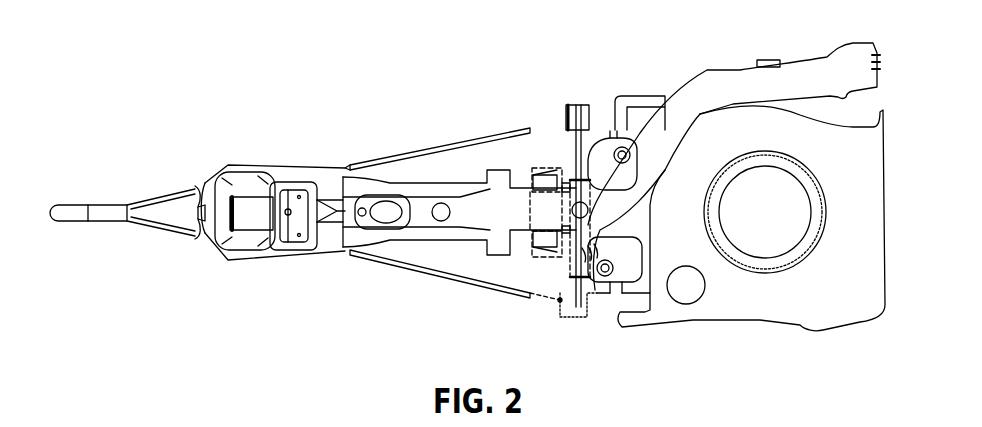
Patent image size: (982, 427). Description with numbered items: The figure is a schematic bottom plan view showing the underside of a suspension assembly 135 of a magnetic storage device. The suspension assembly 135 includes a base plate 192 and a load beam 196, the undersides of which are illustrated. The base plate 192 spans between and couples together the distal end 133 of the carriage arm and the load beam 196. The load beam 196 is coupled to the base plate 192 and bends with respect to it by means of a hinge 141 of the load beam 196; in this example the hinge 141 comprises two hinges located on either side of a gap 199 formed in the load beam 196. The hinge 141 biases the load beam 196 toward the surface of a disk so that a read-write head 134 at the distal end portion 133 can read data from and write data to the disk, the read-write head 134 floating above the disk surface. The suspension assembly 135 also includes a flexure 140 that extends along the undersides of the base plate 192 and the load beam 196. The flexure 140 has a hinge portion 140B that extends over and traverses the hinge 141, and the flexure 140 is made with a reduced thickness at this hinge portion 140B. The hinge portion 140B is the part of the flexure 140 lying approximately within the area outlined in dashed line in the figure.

The distal end 133 is at (175, 310).
The read-write head 134 is at (253, 212).
The suspension assembly 135 is at (437, 145).
The flexure 140 is at (497, 258).
The hinge portion 140B is at (532, 258).
The hinge 141 is at (546, 143).
The base plate 192 is at (620, 97).
The load beam 196 is at (520, 155).
The gap 199 is at (600, 128).